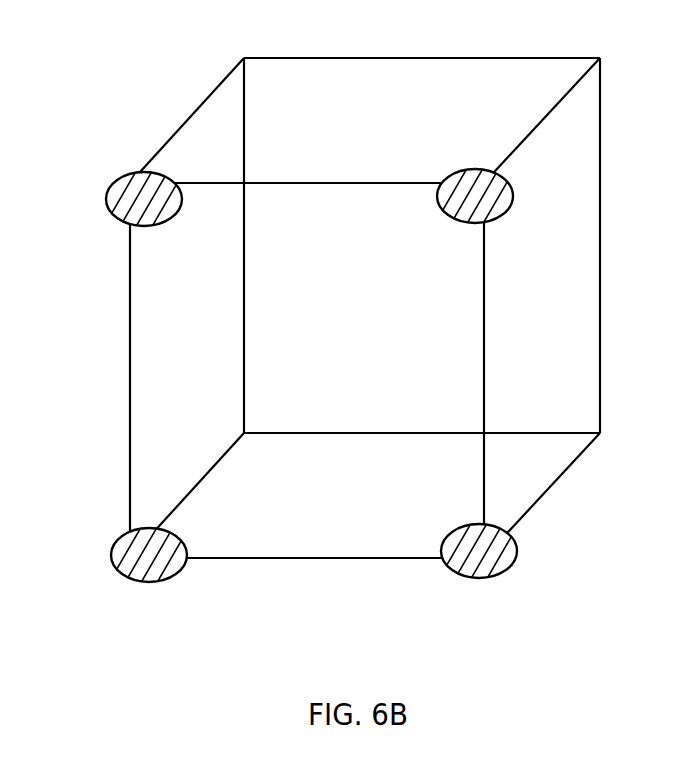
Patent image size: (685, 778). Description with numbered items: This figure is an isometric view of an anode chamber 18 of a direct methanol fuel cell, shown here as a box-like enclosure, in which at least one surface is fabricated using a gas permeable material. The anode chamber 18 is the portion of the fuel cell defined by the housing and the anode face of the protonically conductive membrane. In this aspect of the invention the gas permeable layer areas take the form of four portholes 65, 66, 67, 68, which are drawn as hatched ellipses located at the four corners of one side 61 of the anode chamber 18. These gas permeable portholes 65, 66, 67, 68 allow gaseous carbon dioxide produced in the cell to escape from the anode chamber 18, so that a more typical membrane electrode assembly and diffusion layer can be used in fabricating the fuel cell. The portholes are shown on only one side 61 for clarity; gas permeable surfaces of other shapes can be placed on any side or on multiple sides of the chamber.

The anode chamber 18 is at (303, 126).
The side of the anode chamber 61 is at (463, 325).
The porthole 65 is at (117, 180).
The porthole 66 is at (493, 177).
The porthole 67 is at (138, 580).
The porthole 68 is at (515, 545).